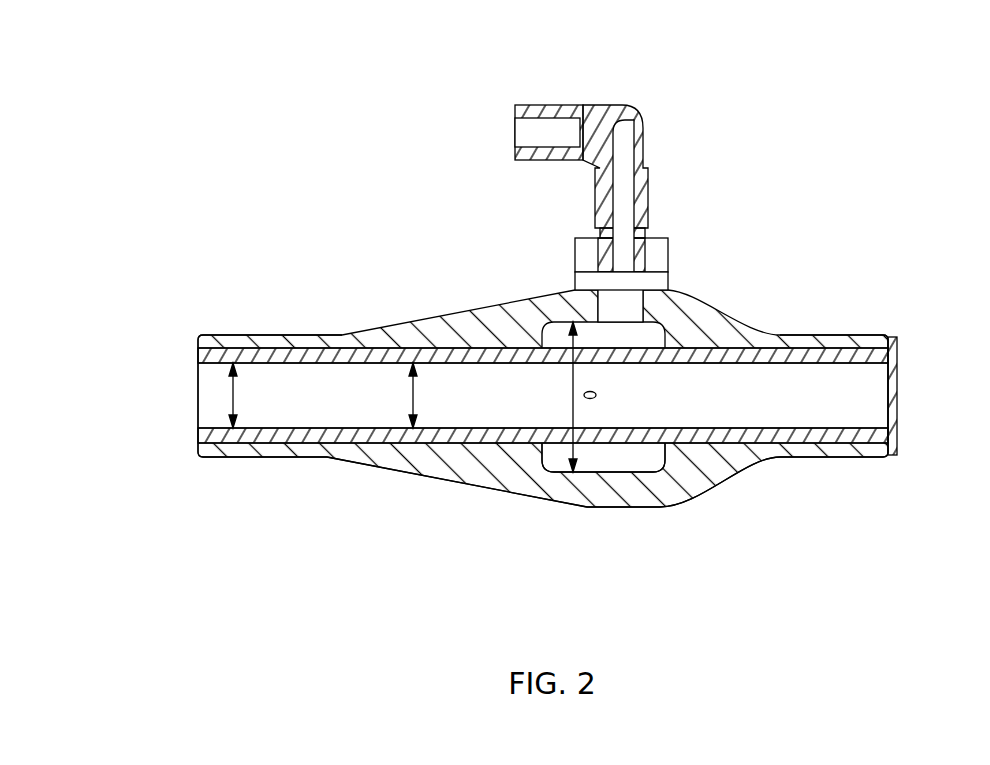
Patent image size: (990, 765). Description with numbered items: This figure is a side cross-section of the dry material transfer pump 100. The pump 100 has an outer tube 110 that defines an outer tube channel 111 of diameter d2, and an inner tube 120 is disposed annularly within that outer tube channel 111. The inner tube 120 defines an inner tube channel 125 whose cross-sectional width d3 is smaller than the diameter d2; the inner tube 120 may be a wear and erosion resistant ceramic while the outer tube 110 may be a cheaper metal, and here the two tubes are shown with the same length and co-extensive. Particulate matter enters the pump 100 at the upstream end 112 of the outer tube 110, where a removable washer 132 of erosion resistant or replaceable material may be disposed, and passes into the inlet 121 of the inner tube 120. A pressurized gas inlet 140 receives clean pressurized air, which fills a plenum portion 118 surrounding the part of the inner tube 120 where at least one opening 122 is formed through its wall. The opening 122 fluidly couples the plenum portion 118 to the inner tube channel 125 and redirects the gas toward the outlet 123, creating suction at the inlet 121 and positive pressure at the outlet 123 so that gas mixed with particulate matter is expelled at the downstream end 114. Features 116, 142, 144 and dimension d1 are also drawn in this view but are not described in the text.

The pump 100 is at (770, 140).
The outer tube 110 is at (713, 298).
The outer tube channel 111 is at (453, 447).
The upstream end 112 is at (843, 453).
The downstream end 114 is at (215, 450).
The bottom portion of housing 116 is at (605, 490).
The plenum portion 118 is at (627, 455).
The inner tube 120 is at (287, 356).
The inlet 121 is at (868, 412).
The opening 122 is at (597, 395).
The outlet 123 is at (208, 382).
The inner tube channel 125 is at (338, 384).
The washer 132 is at (895, 337).
The pressurized gas inlet 140 is at (617, 287).
The elbow fitting 142 is at (630, 170).
The nut 144 is at (658, 252).
The first diameter d1 is at (411, 407).
The diameter of outer tube channel d2 is at (571, 395).
The cross-sectional width of inner tube channel d3 is at (228, 400).